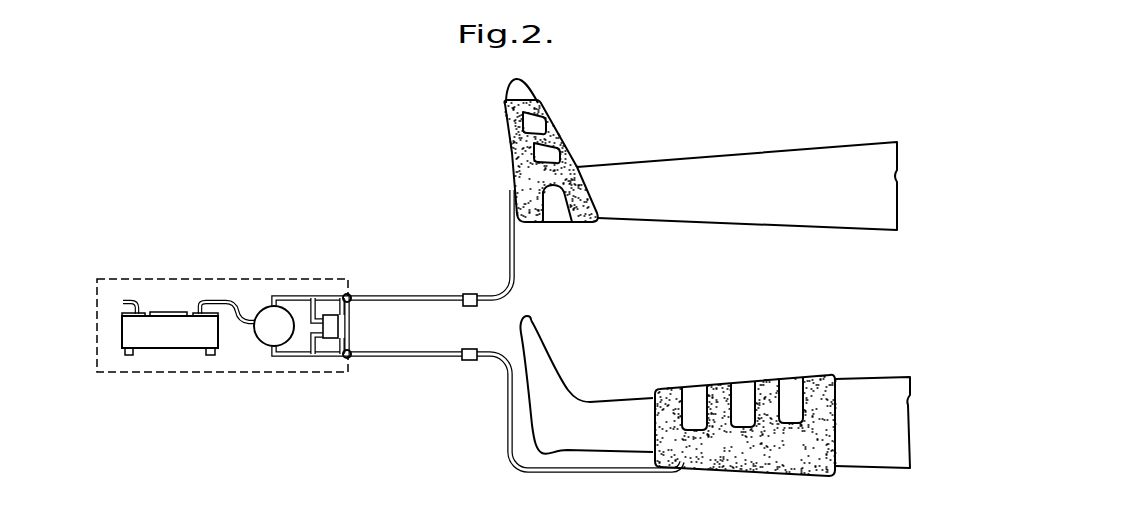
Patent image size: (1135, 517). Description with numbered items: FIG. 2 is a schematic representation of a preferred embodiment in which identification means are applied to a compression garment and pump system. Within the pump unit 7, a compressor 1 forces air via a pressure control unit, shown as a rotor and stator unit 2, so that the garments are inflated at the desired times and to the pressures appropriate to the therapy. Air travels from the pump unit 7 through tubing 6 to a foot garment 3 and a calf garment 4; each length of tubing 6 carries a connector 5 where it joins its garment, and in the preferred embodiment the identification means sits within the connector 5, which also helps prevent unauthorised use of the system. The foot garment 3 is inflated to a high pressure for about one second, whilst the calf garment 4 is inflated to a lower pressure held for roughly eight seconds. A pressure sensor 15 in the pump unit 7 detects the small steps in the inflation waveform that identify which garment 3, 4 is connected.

The compressor 1 is at (168, 337).
The rotor and stator unit 2 is at (268, 317).
The foot garment 3 is at (553, 128).
The calf garment 4 is at (756, 448).
The connector 5 is at (467, 294).
The tubing 6 is at (512, 262).
The pump unit 7 is at (163, 278).
The pressure sensor 15 is at (328, 338).